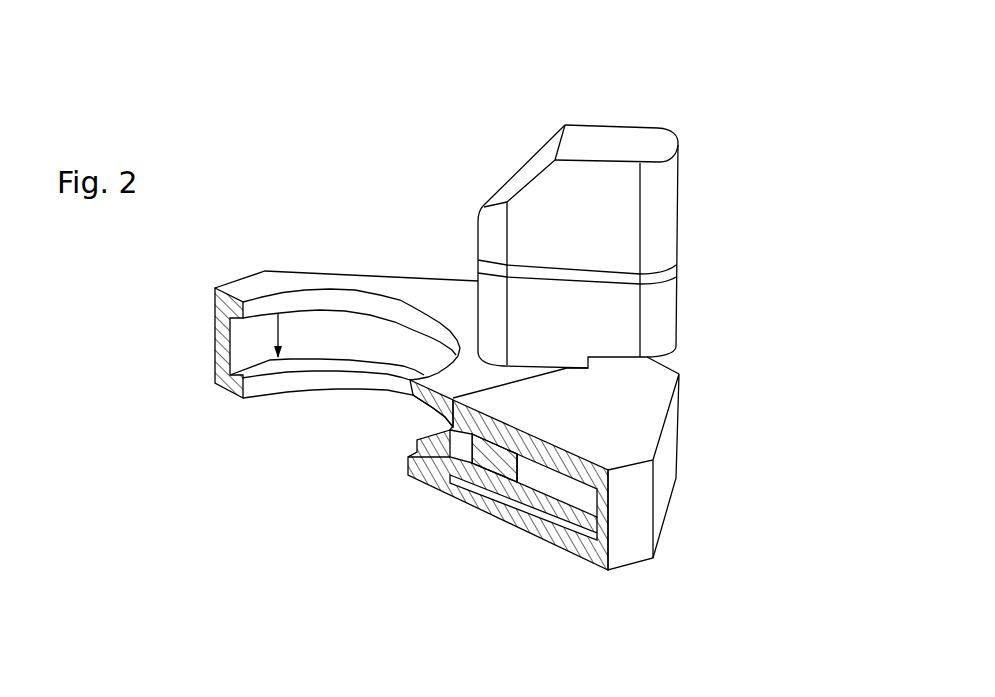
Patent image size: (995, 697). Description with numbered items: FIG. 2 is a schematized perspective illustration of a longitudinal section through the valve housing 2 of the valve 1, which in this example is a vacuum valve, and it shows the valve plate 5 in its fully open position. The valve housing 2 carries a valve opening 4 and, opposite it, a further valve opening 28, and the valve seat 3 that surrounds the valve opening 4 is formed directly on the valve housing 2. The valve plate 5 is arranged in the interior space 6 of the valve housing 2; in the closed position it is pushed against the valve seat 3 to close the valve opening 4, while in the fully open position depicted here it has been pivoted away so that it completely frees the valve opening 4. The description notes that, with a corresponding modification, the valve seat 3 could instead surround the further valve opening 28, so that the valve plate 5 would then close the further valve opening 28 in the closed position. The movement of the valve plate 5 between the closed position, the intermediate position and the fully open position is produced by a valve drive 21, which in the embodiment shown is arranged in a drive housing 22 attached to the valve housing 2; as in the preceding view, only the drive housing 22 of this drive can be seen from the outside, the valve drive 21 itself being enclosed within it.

The valve 1 is at (731, 304).
The valve housing 2 is at (441, 290).
The valve seat 3 is at (278, 370).
The valve opening 4 is at (318, 420).
The valve plate 5 is at (557, 510).
The interior space 6 is at (450, 430).
The valve drive 21 is at (664, 102).
The drive housing 22 is at (656, 207).
The further valve opening 28 is at (295, 300).